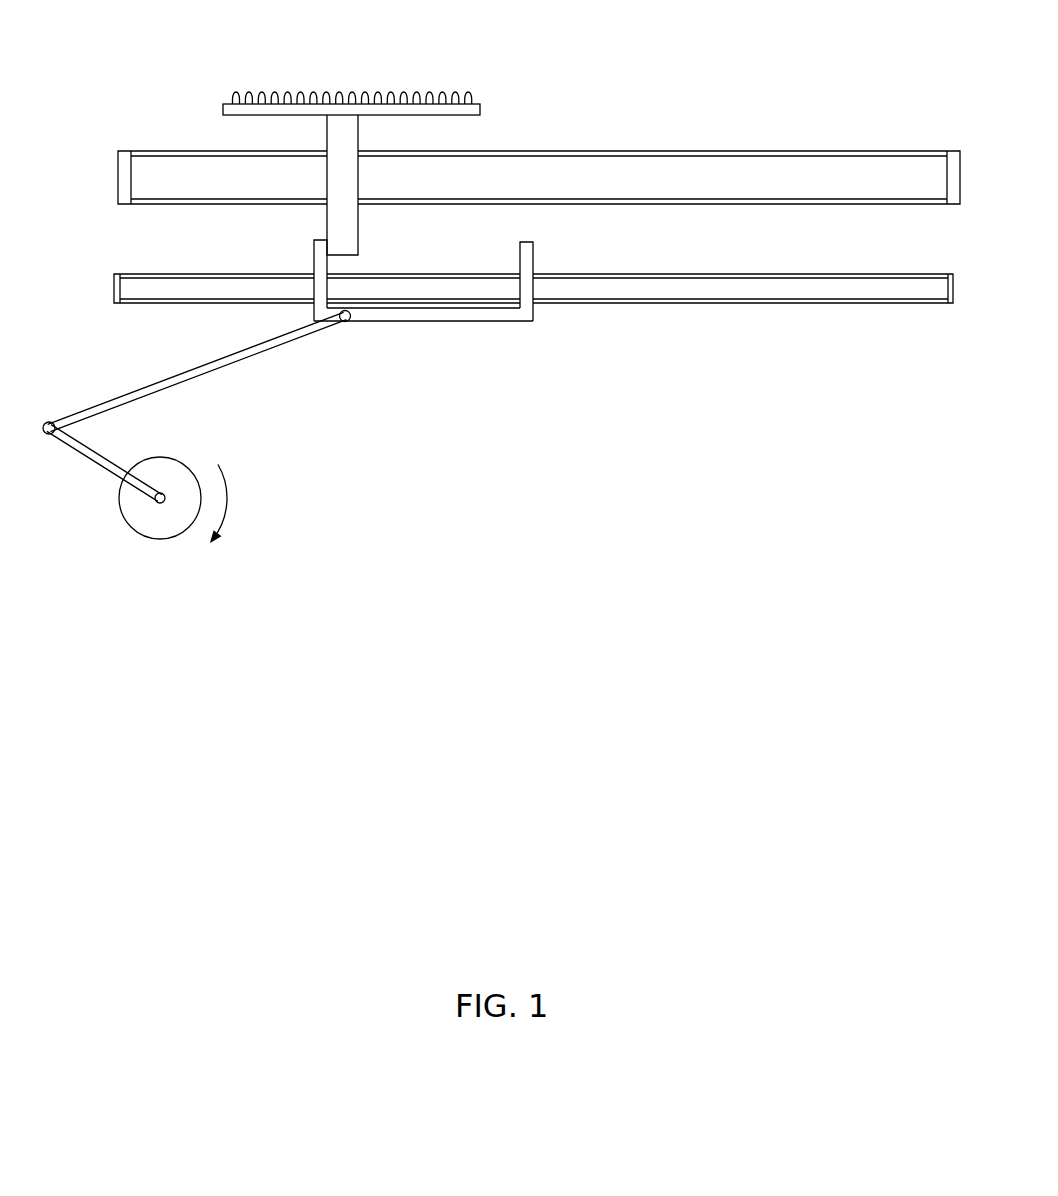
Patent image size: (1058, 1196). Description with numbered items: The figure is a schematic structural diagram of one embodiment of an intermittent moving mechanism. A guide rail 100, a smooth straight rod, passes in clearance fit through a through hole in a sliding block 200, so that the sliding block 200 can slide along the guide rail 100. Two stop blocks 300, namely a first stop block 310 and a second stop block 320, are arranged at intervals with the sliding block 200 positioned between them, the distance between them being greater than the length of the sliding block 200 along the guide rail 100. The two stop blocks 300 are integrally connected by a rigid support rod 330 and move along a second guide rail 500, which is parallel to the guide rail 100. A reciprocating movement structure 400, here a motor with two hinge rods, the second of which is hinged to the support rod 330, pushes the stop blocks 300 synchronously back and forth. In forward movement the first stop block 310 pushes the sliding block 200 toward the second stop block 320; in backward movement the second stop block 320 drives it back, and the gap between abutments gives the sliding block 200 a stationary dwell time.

The guide rail 100 is at (712, 155).
The sliding block 200 is at (342, 167).
The stop blocks 300 is at (423, 339).
The first stop block 310 is at (319, 293).
The second stop block 320 is at (525, 288).
The support rod 330 is at (387, 315).
The reciprocating movement structure 400 is at (202, 442).
The second guide rail 500 is at (742, 303).